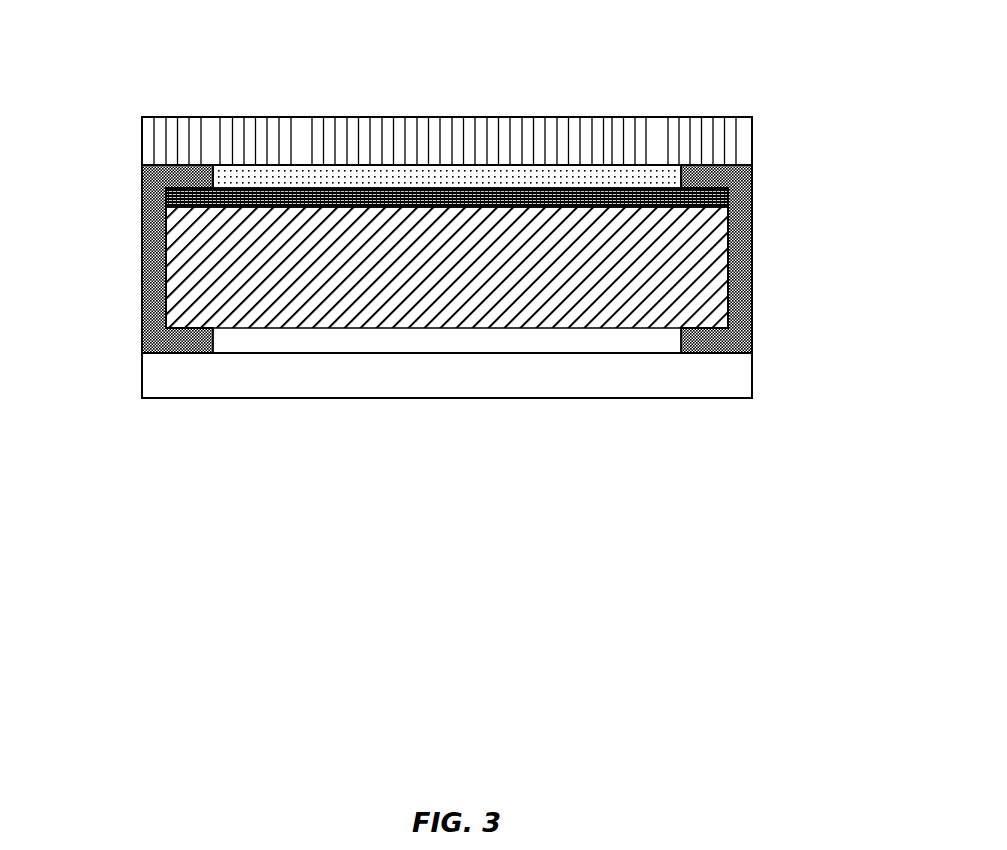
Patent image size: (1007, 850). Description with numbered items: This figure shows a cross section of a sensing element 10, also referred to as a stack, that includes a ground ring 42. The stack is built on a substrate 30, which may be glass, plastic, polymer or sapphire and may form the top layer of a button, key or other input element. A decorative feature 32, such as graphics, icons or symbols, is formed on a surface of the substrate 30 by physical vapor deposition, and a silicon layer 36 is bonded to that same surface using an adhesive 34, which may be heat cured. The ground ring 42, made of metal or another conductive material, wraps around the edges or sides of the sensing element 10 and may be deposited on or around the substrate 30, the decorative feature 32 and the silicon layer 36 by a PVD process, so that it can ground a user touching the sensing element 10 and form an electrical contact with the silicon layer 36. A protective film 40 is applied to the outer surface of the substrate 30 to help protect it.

The sensing element 10 is at (233, 38).
The substrate 30 is at (752, 233).
The decorative feature 32 is at (752, 178).
The adhesive 34 is at (668, 163).
The silicon layer 36 is at (752, 117).
The protective film 40 is at (752, 373).
The ground ring 42 is at (142, 258).